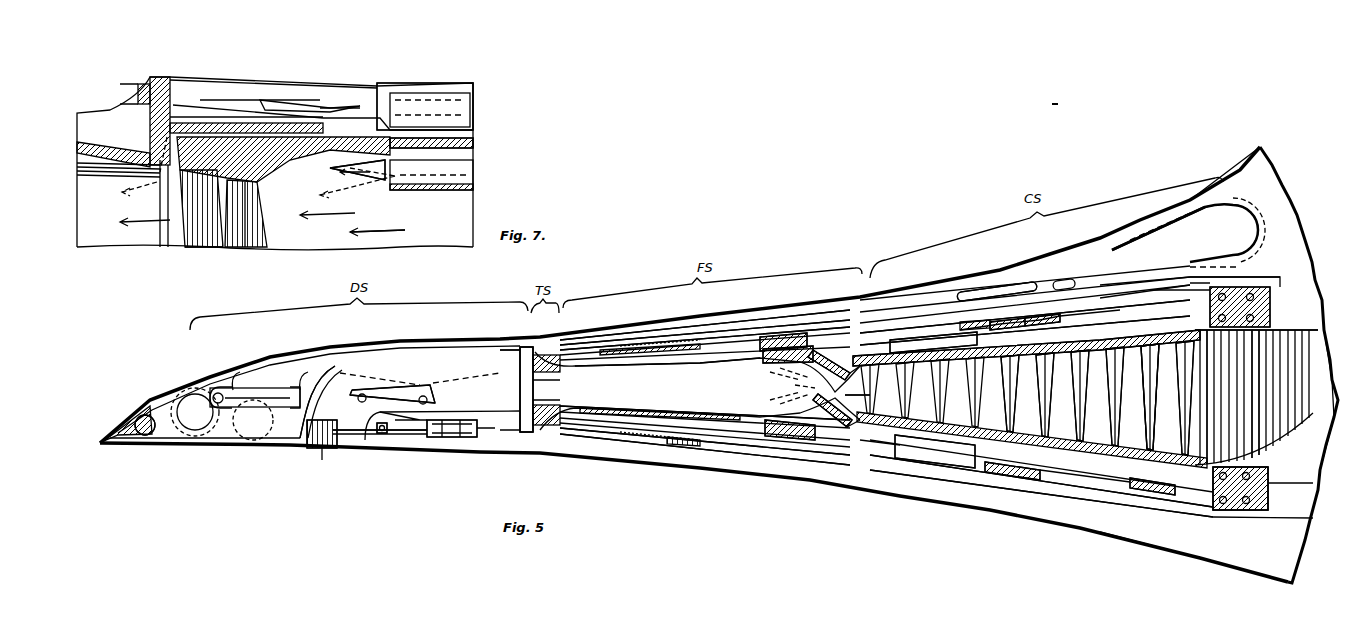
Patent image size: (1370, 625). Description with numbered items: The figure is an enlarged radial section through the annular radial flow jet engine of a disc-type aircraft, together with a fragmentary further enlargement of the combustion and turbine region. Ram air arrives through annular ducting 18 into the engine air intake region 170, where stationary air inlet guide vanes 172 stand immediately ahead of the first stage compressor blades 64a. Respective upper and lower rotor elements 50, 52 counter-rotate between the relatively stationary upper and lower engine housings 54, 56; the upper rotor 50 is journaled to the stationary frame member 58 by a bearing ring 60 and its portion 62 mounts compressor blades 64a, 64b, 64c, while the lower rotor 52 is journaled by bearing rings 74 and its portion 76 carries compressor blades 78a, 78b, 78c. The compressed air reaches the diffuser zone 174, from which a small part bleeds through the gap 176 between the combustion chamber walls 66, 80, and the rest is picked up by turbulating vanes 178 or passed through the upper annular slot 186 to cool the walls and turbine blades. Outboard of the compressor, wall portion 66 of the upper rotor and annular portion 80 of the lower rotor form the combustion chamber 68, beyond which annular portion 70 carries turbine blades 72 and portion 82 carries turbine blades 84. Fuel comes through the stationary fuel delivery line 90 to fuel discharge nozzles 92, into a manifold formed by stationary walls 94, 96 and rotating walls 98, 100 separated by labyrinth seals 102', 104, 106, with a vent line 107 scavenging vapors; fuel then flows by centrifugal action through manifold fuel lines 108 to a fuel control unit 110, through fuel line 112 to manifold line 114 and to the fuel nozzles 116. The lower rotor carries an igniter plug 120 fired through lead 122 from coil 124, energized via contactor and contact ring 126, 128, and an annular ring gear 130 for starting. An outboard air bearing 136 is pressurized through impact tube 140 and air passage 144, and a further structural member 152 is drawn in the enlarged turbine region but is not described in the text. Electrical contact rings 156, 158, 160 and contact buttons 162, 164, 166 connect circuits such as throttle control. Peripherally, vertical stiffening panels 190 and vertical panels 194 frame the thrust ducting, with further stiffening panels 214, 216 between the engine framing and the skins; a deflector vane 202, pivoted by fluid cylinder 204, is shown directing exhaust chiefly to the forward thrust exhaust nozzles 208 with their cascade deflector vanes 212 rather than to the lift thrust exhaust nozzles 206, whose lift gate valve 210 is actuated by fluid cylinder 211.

In FIG. 5, the annular ducting 18 is at (1325, 455).
In FIG. 5, the upper rotor element 50 is at (730, 330).
In FIG. 5, the lower rotor element 52 is at (770, 420).
In FIG. 5, the upper engine housing 54 is at (940, 325).
In FIG. 5, the lower engine housing 56 is at (950, 480).
In FIG. 5, the stationary frame member 58 is at (1270, 300).
In FIG. 5, the bearing ring 60 is at (1240, 290).
In FIG. 5, the portion of upper rotor in compressor section 62 is at (878, 360).
In FIG. 5, the first stage compressor blade 64a is at (1188, 369).
In FIG. 5, the compressor blade 64b is at (1125, 369).
In FIG. 5, the compressor blade 64c is at (1080, 441).
In FIG. 5, the upper combustion chamber wall portion 66 is at (650, 352).
In FIG. 7, the combustion chamber 68 is at (450, 231).
In FIG. 5, the combustion chamber 68 is at (738, 396).
In FIG. 5, the annular portion of upper rotor 70 is at (535, 348).
In FIG. 7, the turbine blade 72 is at (203, 225).
In FIG. 5, the turbine blade 72 is at (510, 400).
In FIG. 5, the bearing rings 74 is at (1240, 510).
In FIG. 5, the portion of lower rotor in compressor section 76 is at (1060, 482).
In FIG. 5, the compressor blade 78a is at (1158, 430).
In FIG. 5, the compressor blade 78b is at (1096, 426).
In FIG. 5, the compressor blade 78c is at (1045, 437).
In FIG. 5, the lower combustion chamber wall portion 80 is at (725, 445).
In FIG. 5, the portion of lower rotor in turbine section 82 is at (527, 432).
In FIG. 7, the turbine blade 84 is at (253, 230).
In FIG. 5, the turbine blade 84 is at (585, 445).
In FIG. 5, the stationary fuel delivery line 90 is at (1280, 277).
In FIG. 5, the fuel discharge nozzle 92 is at (1140, 290).
In FIG. 5, the stationary wall of fuel manifold 94 is at (1117, 290).
In FIG. 5, the stationary wall of fuel manifold 96 is at (1207, 290).
In FIG. 5, the rotating wall of fuel manifold 98 is at (1040, 285).
In FIG. 5, the rotating wall of fuel manifold 100 is at (1090, 304).
In FIG. 5, the labyrinth seal 102' is at (1155, 246).
In FIG. 5, the labyrinth seal 104 is at (1163, 290).
In FIG. 5, the labyrinth seal 106 is at (1185, 345).
In FIG. 5, the vent line 107 is at (1190, 340).
In FIG. 5, the manifold fuel line 108 is at (933, 342).
In FIG. 5, the fuel control unit 110 is at (920, 340).
In FIG. 5, the fuel line 112 is at (836, 362).
In FIG. 5, the manifold line 114 is at (830, 425).
In FIG. 5, the fuel nozzle 116 is at (790, 340).
In FIG. 5, the fuel igniter plug 120 is at (795, 440).
In FIG. 5, the lead 122 is at (850, 420).
In FIG. 5, the coil 124 is at (935, 468).
In FIG. 5, the contactor 126 is at (1010, 480).
In FIG. 5, the contact ring 128 is at (985, 470).
In FIG. 5, the annular ring gear 130 is at (1150, 495).
In FIG. 7, the outboard air bearing 136 is at (280, 100).
In FIG. 5, the impact tube 140 is at (765, 330).
In FIG. 7, the air passage 144 is at (340, 110).
In FIG. 7, the box beam 152 is at (473, 103).
In FIG. 5, the electrical circuit contact ring 156 is at (972, 318).
In FIG. 5, the electrical circuit contact ring 158 is at (1018, 315).
In FIG. 5, the electrical circuit contact ring 160 is at (1049, 311).
In FIG. 5, the contact button 162 is at (985, 328).
In FIG. 5, the contact button 164 is at (1020, 322).
In FIG. 5, the contact button 166 is at (1060, 318).
In FIG. 5, the engine air intake region 170 is at (1300, 385).
In FIG. 5, the air inlet guide vane 172 is at (1228, 406).
In FIG. 5, the diffuser zone 174 is at (830, 340).
In FIG. 5, the gap 176 is at (878, 447).
In FIG. 7, the turbulating vane 178 is at (473, 143).
In FIG. 7, the upper annular slot 186 is at (380, 182).
In FIG. 5, the vertical stiffening panel 190 is at (170, 432).
In FIG. 5, the vertical panel 194 is at (392, 375).
In FIG. 5, the deflector vane 202 is at (420, 400).
In FIG. 5, the fluid cylinder 204 is at (255, 400).
In FIG. 5, the lift thrust exhaust nozzle 206 is at (355, 445).
In FIG. 5, the forward thrust exhaust nozzle 208 is at (322, 460).
In FIG. 5, the lift gate valve 210 is at (385, 435).
In FIG. 5, the fluid cylinder 211 is at (455, 437).
In FIG. 5, the cascade deflector vane 212 is at (315, 440).
In FIG. 5, the vertical stiffening panel 214 is at (695, 322).
In FIG. 5, the vertical stiffening panel 216 is at (650, 462).